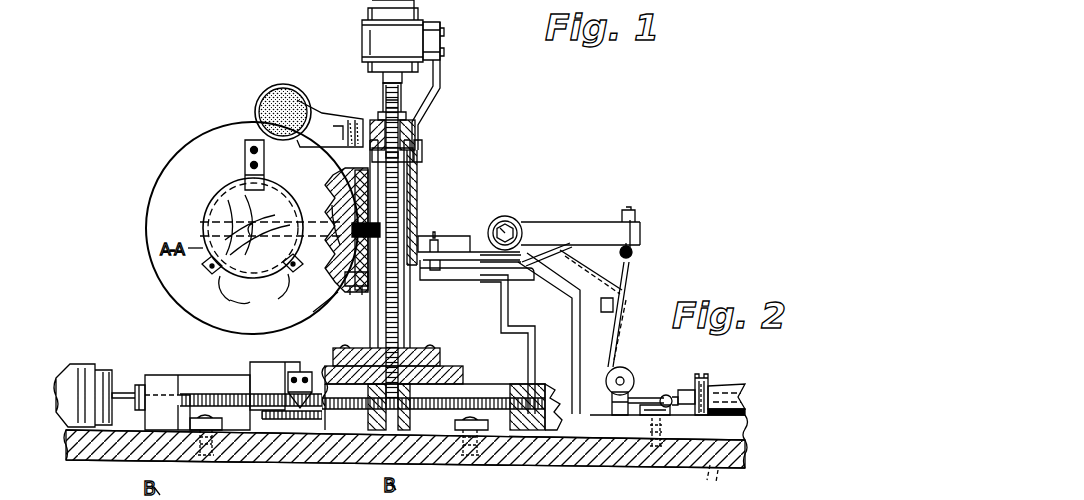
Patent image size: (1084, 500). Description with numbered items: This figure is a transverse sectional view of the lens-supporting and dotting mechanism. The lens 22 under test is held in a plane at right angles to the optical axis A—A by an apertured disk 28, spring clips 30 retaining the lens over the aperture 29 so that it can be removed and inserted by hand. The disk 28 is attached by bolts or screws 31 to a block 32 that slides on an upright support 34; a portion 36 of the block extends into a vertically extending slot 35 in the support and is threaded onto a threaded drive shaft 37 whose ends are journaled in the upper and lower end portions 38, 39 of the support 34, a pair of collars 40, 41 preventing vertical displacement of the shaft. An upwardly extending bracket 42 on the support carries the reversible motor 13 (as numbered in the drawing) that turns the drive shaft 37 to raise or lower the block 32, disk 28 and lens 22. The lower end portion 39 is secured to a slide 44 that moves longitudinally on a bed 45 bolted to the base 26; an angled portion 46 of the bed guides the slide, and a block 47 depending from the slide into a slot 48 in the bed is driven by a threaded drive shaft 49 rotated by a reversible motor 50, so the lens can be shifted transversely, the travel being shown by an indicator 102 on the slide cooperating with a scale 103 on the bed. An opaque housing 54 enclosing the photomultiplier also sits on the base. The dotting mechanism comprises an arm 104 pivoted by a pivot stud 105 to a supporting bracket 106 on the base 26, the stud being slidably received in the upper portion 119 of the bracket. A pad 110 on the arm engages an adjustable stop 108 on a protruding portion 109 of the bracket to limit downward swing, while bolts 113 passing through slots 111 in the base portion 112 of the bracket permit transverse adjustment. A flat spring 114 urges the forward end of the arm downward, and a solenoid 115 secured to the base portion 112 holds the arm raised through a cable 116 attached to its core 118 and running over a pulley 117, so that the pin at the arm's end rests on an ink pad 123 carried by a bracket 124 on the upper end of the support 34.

The motor 13 is at (425, 12).
The lens under test 22 is at (202, 228).
The base 26 is at (585, 463).
The apertured disk 28 is at (156, 194).
The aperture 29 is at (219, 193).
The spring clips 30 is at (245, 156).
The bolts or screws 31 is at (355, 282).
The block 32 is at (358, 310).
The upright support 34 is at (364, 116).
The vertically extending slot 35 is at (420, 210).
The portion of block 36 is at (455, 195).
The threaded drive shaft 37 is at (412, 160).
The upper end portion 38 is at (415, 133).
The lower end portion 39 is at (438, 356).
The collar 40 is at (406, 118).
The collar 41 is at (423, 148).
The bracket 42 is at (441, 78).
The slide 44 is at (265, 363).
The bed 45 is at (211, 369).
The portion of bed 46 is at (190, 378).
The block 47 is at (392, 430).
The elongated opening or slot 48 is at (340, 430).
The threaded drive shaft 49 is at (490, 402).
The reversible motor 50 is at (84, 363).
The opaque housing 54 is at (196, 480).
The indicator 102 is at (296, 370).
The scale 103 is at (280, 424).
The arm 104 is at (598, 222).
The pivot stud 105 is at (512, 232).
The supporting bracket 106 is at (547, 340).
The adjustable stop 108 is at (432, 279).
The protruding portion 109 is at (487, 282).
The pad 110 is at (440, 249).
The slots 111 is at (716, 482).
The base portion 112 is at (734, 424).
The bolts 113 is at (664, 396).
The flat spring 114 is at (546, 244).
The solenoid 115 is at (733, 382).
The cable 116 is at (636, 254).
The pulley 117 is at (622, 368).
The core 118 is at (685, 390).
The upper portion 119 is at (528, 251).
The ink pad 123 is at (265, 92).
The bracket 124 is at (318, 106).